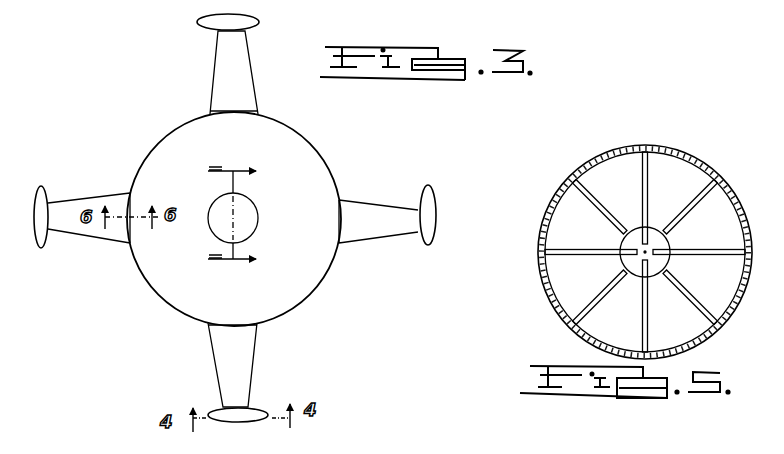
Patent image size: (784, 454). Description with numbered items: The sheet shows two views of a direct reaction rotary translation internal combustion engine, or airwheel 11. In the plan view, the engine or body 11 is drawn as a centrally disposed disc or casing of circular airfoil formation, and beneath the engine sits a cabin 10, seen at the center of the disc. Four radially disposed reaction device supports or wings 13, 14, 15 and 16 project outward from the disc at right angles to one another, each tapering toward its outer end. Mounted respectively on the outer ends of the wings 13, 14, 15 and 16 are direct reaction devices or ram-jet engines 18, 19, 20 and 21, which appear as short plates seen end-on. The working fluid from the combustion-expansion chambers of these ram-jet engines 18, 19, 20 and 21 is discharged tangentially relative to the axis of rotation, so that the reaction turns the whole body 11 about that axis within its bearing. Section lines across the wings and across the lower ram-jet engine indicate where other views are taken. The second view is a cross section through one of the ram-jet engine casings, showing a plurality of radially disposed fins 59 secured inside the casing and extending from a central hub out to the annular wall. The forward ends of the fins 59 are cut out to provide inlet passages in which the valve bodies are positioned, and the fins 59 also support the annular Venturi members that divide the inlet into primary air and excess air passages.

In FIG. 3, the cabin 10 is at (236, 161).
In FIG. 3, the airwheel 11 is at (327, 162).
In FIG. 3, the wing 13 is at (386, 232).
In FIG. 3, the wing 14 is at (246, 80).
In FIG. 3, the wing 15 is at (74, 229).
In FIG. 3, the wing 16 is at (245, 365).
In FIG. 3, the ram-jet engine 18 is at (437, 211).
In FIG. 3, the ram-jet engine 19 is at (208, 33).
In FIG. 3, the ram-jet engine 20 is at (54, 197).
In FIG. 3, the ram-jet engine 21 is at (240, 422).
In FIG. 5, the fin 59 is at (597, 292).